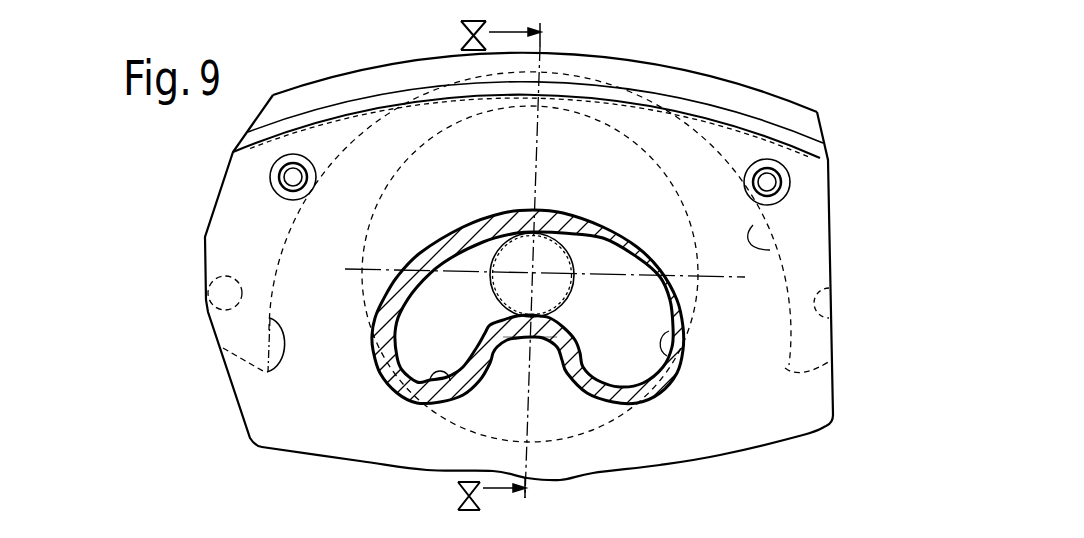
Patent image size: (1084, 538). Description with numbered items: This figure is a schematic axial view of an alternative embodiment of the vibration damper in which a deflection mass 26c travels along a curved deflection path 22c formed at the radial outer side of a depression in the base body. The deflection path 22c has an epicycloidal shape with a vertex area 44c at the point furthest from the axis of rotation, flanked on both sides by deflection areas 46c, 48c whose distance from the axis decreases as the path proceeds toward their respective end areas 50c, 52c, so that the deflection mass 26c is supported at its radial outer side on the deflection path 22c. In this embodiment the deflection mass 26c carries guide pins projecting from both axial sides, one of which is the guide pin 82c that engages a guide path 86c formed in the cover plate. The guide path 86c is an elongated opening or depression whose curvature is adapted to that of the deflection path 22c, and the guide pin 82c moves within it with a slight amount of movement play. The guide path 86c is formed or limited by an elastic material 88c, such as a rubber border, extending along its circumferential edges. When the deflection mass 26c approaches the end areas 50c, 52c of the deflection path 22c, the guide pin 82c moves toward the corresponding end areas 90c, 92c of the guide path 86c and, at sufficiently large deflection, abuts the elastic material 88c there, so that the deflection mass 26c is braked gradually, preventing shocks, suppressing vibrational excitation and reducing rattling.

The deflection path 22c is at (770, 250).
The deflection mass 26c is at (634, 202).
The vertex area 44c is at (577, 113).
The deflection area 46c is at (718, 182).
The deflection area 48c is at (373, 152).
The end area 50c is at (782, 290).
The end area 52c is at (267, 368).
The guide pin 82c is at (505, 277).
The guide path 86c is at (633, 360).
The elastic material 88c is at (583, 393).
The end area of guide path 90c is at (690, 364).
The end area of guide path 92c is at (430, 380).